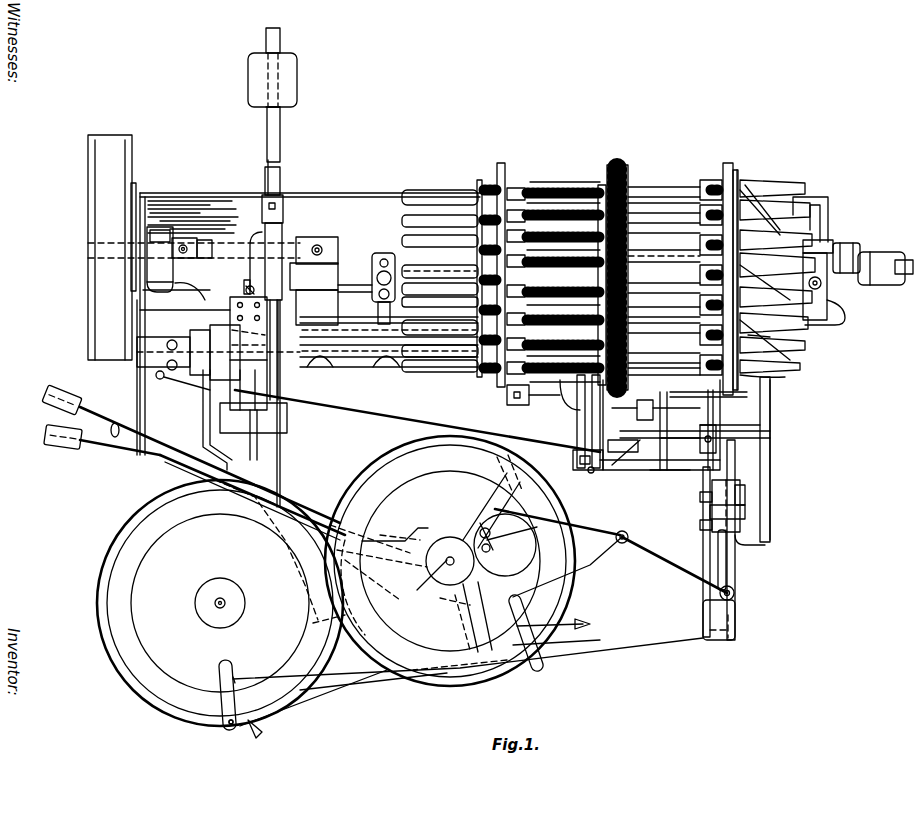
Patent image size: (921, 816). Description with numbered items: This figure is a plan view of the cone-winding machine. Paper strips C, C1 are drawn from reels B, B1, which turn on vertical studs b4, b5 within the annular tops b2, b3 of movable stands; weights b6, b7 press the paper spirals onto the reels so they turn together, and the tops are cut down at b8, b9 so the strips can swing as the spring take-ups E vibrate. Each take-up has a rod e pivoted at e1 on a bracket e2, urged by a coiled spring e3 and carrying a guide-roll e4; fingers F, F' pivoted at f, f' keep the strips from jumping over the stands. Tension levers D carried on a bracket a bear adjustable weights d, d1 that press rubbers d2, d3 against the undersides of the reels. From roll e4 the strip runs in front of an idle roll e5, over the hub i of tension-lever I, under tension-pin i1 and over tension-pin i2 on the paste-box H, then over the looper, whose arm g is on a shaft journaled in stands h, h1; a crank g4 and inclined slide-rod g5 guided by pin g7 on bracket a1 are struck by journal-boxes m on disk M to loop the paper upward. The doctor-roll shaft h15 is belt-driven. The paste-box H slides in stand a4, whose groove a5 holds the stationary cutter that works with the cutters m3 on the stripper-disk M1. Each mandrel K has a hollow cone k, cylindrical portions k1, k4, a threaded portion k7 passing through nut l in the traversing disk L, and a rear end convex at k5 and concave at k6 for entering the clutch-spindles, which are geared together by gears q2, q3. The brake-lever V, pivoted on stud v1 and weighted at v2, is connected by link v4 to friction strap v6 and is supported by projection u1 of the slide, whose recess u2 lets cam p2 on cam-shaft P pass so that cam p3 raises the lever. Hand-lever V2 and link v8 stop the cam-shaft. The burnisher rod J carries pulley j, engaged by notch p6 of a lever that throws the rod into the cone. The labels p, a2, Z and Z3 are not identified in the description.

The frame plate p is at (133, 161).
The cam p2 is at (160, 243).
The cam p3 is at (282, 250).
The notch p6 is at (837, 247).
The brake-lever V is at (282, 139).
The stud v1 is at (290, 268).
The weighted end v2 is at (298, 88).
The link v4 is at (246, 290).
The friction strap v6 is at (238, 320).
The link v8 is at (400, 427).
The hand-lever V2 is at (772, 468).
The cam-shaft P is at (358, 254).
The projection u1 is at (147, 268).
The recess u2 is at (192, 282).
The gear q2 is at (322, 378).
The gear q3 is at (312, 325).
The bracket a is at (204, 417).
The bracket a1 is at (580, 407).
The post a2 is at (136, 402).
The stand a4 is at (695, 398).
The groove a5 is at (832, 290).
The hollow cone k is at (787, 228).
The cylindrical portion k1 is at (718, 184).
The cylindrical part k4 is at (665, 440).
The convex side k5 is at (408, 262).
The concave side k6 is at (452, 248).
The screw-threaded portion k7 is at (530, 210).
The cone-forming mandrel K is at (662, 225).
The mandrel-traversing disk L is at (504, 180).
The nut l is at (514, 212).
The journal-box m is at (560, 197).
The cutter m3 is at (750, 337).
The disk M is at (640, 222).
The stripper-disk M1 is at (733, 165).
The cone Z is at (745, 245).
The arm Z3 is at (786, 377).
The pulley j is at (842, 257).
The burnisher rod J is at (862, 255).
The arm g is at (655, 468).
The crank g4 is at (590, 470).
The slide-rod g5 is at (597, 430).
The pin g7 is at (627, 402).
The stand h is at (612, 465).
The stand h1 is at (707, 450).
The shaft h15 is at (700, 432).
The paste-box H is at (770, 424).
The hub i is at (740, 537).
The tension-pin i1 is at (747, 511).
The tension-pin i2 is at (747, 498).
The tension-lever I is at (720, 550).
The rod e is at (578, 521).
The pivot e1 is at (493, 543).
The bracket e2 is at (488, 560).
The coiled spring e3 is at (473, 527).
The guide-roll e4 is at (621, 545).
The idle roll e5 is at (736, 594).
The spring take-up E is at (622, 530).
The paper C is at (660, 557).
The paper C1 is at (637, 637).
The reel B is at (553, 607).
The reel B1 is at (300, 705).
The finger F is at (555, 628).
The pivot f is at (556, 641).
The finger F' is at (251, 670).
The pivot f' is at (224, 738).
The annular top b2 is at (443, 682).
The annular top b3 is at (100, 577).
The vertical stud b4 is at (445, 598).
The vertical stud b5 is at (224, 602).
The weight b6 is at (417, 582).
The weight b7 is at (224, 587).
The cut-down portion b8 is at (560, 505).
The cut-down portion b9 is at (343, 647).
The adjustable weight d is at (44, 395).
The adjustable weight d1 is at (53, 450).
The rubber d2 is at (413, 560).
The rubber d3 is at (313, 623).
The tension lever D is at (180, 463).